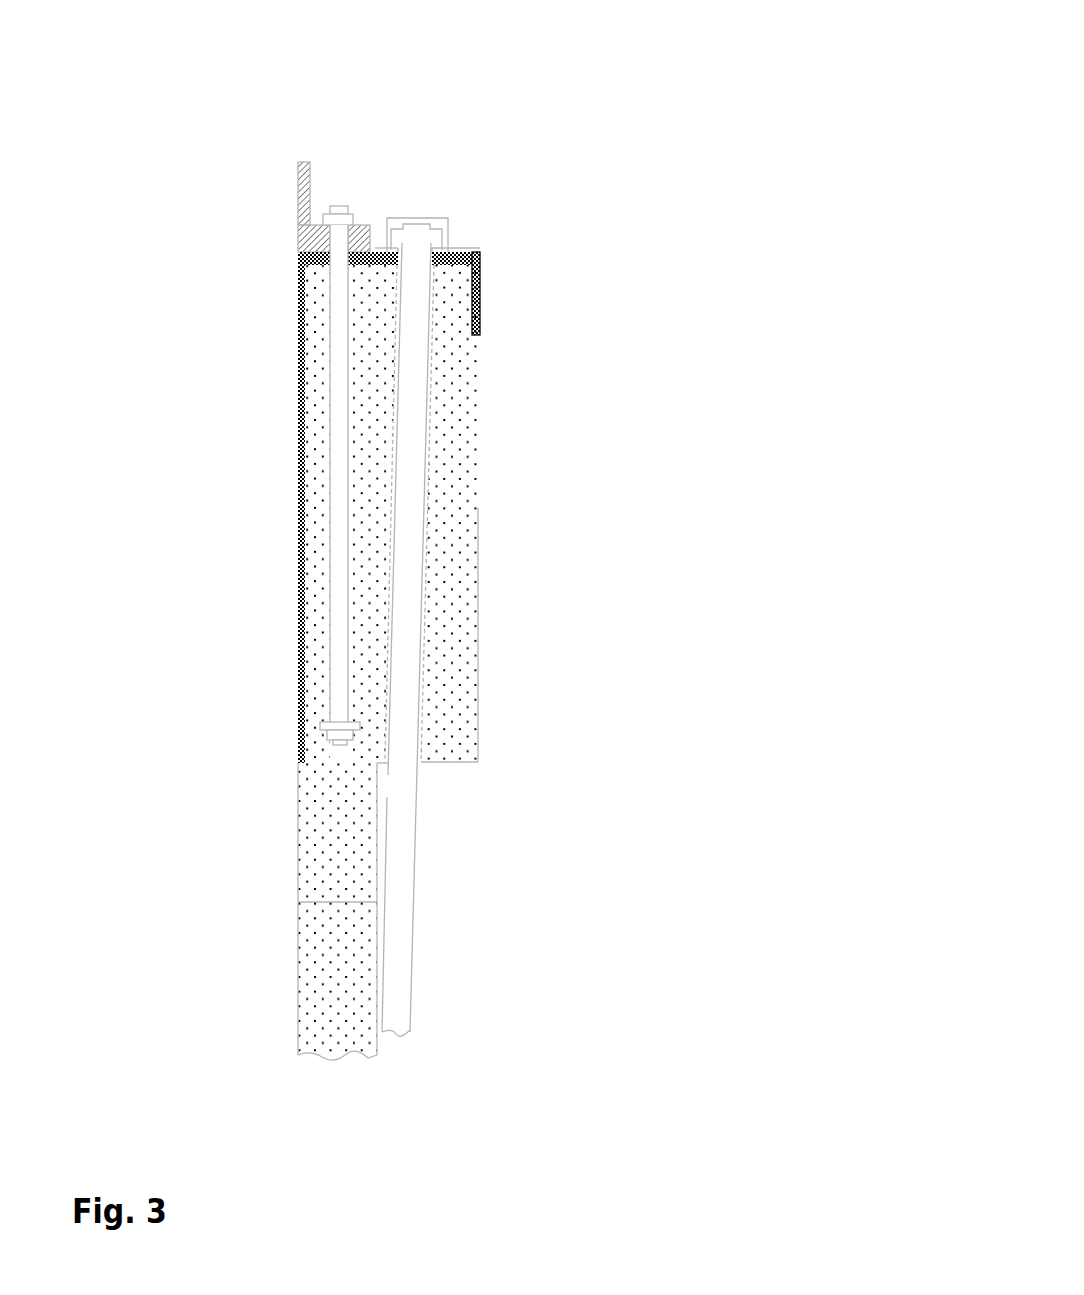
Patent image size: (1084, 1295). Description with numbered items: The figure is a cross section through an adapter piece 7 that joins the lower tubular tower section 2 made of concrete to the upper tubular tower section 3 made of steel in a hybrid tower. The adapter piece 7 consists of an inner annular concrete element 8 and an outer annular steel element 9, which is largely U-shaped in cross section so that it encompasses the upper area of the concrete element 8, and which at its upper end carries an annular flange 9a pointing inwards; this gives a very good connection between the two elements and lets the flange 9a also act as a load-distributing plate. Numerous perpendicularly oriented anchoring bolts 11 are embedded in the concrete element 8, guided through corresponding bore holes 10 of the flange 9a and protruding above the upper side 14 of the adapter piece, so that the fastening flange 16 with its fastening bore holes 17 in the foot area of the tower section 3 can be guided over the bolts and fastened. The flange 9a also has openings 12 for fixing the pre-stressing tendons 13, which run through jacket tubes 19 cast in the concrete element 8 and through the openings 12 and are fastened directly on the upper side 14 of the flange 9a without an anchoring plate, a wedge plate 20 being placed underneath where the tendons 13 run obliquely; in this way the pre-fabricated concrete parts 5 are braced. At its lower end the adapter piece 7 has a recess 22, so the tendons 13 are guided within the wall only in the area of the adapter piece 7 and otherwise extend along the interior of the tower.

The lower tubular tower section 2 is at (282, 1002).
The upper tubular tower section 3 is at (278, 281).
The pre-fabricated concrete parts 5 is at (297, 1035).
The adapter piece 7 is at (262, 506).
The concrete element 8 is at (317, 800).
The steel element 9 is at (298, 413).
The flange 9a is at (468, 250).
The bore holes 10 is at (328, 259).
The anchoring bolts 11 is at (333, 625).
The openings 12 is at (433, 259).
The pre-stressing tendons 13 is at (408, 702).
The upper side 14 is at (482, 164).
The fastening flange 16 is at (298, 230).
The fastening bore holes 17 is at (298, 205).
The jacket tubes 19 is at (427, 600).
The wedge plate 20 is at (378, 247).
The recess 22 is at (375, 827).